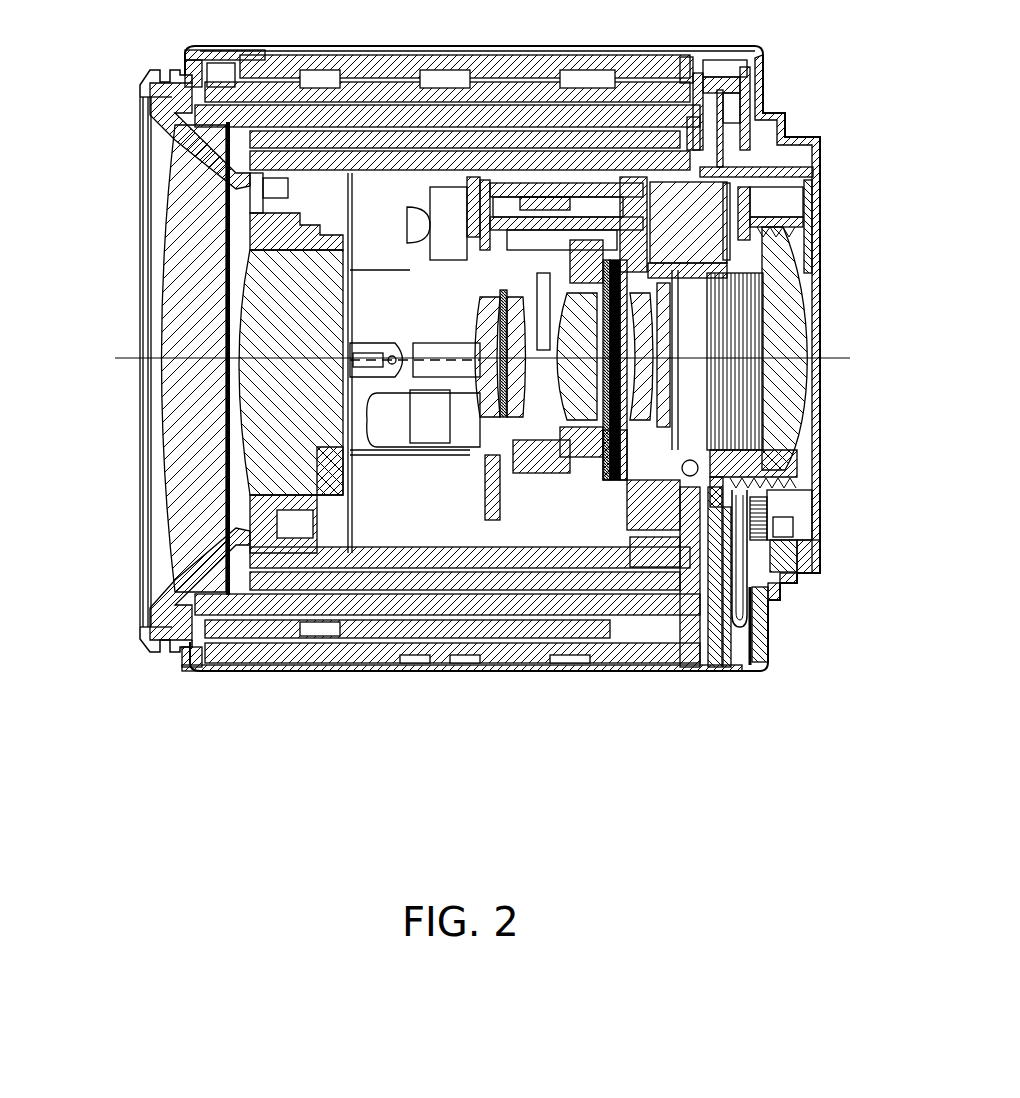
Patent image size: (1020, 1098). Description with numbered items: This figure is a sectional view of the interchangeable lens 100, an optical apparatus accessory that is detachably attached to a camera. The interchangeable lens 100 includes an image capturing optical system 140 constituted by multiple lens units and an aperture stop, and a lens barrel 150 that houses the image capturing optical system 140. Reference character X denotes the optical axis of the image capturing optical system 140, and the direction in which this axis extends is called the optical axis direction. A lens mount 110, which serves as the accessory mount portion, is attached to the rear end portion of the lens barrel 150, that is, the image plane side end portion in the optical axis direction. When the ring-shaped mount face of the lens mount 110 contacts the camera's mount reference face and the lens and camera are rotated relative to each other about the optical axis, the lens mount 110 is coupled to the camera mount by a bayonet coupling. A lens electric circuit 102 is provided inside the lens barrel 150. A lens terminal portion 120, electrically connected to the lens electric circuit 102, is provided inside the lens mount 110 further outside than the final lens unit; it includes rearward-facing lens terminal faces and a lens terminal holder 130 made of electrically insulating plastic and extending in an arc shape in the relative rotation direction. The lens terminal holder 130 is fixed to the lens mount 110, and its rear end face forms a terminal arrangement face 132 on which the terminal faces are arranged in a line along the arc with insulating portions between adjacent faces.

The interchangeable lens 100 is at (118, 122).
The lens mount 110 is at (777, 100).
The lens terminal portion 120 is at (828, 545).
The terminal arrangement face 132 is at (790, 553).
The lens terminal holder 130 is at (790, 575).
The lens electric circuit 102 is at (752, 592).
The image capturing optical system 140 is at (580, 377).
The lens barrel 150 is at (487, 660).
The optical axis X is at (128, 360).